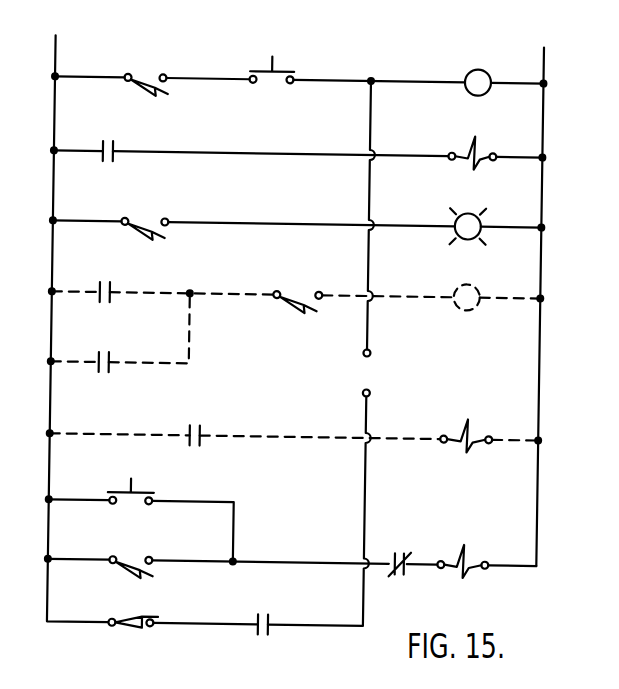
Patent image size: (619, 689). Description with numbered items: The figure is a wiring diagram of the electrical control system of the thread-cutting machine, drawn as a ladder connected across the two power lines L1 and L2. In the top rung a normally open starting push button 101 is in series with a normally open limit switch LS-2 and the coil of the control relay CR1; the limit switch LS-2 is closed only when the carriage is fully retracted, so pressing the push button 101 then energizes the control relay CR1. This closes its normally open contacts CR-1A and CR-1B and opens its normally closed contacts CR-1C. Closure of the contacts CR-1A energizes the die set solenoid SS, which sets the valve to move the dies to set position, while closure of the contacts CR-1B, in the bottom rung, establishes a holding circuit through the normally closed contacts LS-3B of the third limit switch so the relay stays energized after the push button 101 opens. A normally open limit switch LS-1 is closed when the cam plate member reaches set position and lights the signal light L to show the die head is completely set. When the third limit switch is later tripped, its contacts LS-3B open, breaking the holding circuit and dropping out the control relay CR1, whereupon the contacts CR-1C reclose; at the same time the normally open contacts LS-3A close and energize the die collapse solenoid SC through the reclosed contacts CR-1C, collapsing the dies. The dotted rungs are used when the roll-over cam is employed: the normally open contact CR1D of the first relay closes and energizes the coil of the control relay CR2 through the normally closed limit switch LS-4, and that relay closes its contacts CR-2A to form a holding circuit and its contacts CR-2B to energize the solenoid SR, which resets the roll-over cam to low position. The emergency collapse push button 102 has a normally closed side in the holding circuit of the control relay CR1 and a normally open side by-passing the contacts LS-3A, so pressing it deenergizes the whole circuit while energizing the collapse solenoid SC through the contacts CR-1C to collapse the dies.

The starting push button 101 is at (271, 57).
The emergency collapse push button 102 is at (371, 375).
The power line L1 is at (76, 320).
The power line L2 is at (543, 294).
The normally open limit switch LS-2 is at (148, 73).
The control relay CR1 is at (474, 72).
The normally open control contacts CR-1A is at (114, 137).
The die set solenoid SS is at (472, 143).
The normally open limit switch LS-1 is at (145, 215).
The signal light L is at (468, 217).
The normally open contact CR1D is at (112, 279).
The normally open contacts CR-2A is at (114, 350).
The normally closed limit switch LS-4 is at (298, 289).
The control relay CR2 is at (469, 286).
The normally open contacts CR-2B is at (203, 425).
The solenoid SR is at (466, 427).
The normally open contacts of limit switch LS3 LS-3A is at (134, 554).
The normally closed contacts CR-1C is at (410, 553).
The die collapse solenoid SC is at (463, 549).
The normally closed contacts of limit switch LS3 LS-3B is at (134, 608).
The normally open control contacts CR-1B is at (268, 611).